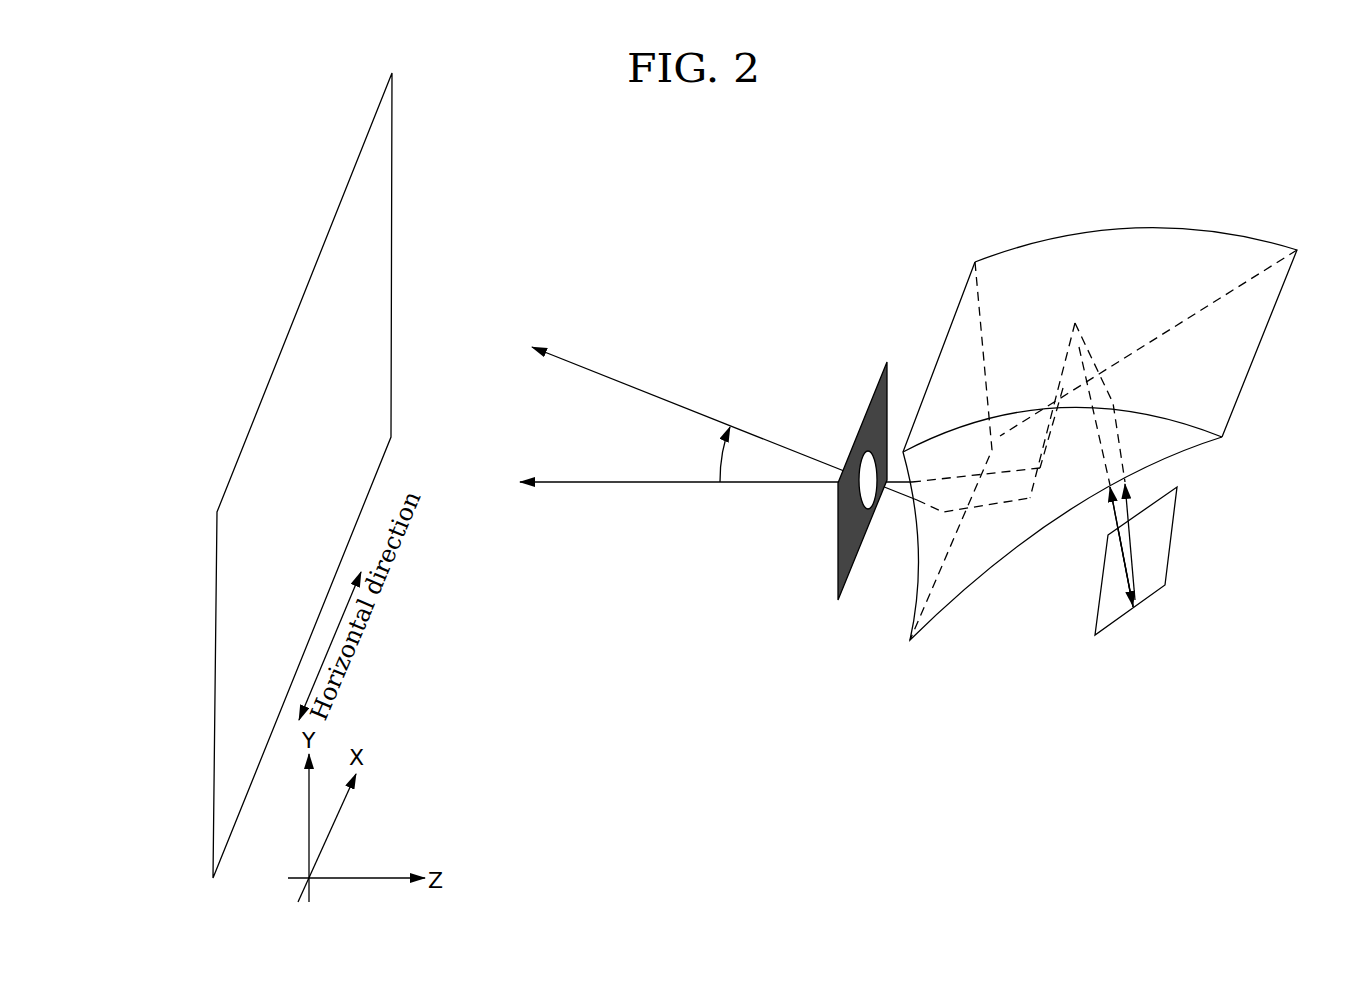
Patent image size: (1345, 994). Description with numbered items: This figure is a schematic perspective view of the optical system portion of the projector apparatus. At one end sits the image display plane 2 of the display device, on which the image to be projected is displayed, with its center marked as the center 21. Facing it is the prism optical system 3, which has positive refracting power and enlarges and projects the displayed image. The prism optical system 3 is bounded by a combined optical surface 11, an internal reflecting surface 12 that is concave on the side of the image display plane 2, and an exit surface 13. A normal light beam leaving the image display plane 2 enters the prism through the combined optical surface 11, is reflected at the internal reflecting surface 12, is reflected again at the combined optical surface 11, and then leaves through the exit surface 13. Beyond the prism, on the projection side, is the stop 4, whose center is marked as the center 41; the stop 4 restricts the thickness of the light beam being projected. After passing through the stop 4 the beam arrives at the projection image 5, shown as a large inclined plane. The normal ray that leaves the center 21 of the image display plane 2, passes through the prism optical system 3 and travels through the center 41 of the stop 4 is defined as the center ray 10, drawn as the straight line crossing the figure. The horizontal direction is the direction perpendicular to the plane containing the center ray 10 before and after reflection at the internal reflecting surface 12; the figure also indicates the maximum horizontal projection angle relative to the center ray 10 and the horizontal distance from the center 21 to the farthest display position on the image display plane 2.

The image display plane 2 is at (1173, 512).
The center of the image display plane 21 is at (1112, 558).
The prism optical system 3 is at (1250, 293).
The combined optical surface 11 is at (1220, 367).
The internal reflecting surface 12 is at (1123, 245).
The exit surface 13 is at (958, 340).
The stop 4 is at (873, 393).
The center of the stop 41 is at (857, 503).
The projection image 5 is at (322, 243).
The center ray 10 is at (593, 483).